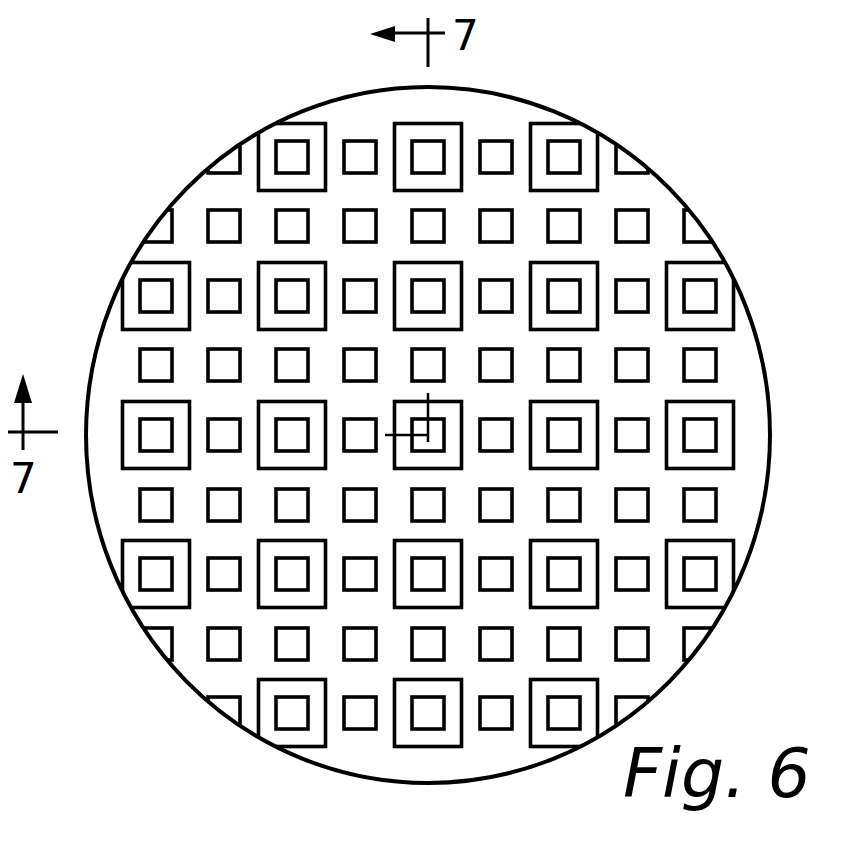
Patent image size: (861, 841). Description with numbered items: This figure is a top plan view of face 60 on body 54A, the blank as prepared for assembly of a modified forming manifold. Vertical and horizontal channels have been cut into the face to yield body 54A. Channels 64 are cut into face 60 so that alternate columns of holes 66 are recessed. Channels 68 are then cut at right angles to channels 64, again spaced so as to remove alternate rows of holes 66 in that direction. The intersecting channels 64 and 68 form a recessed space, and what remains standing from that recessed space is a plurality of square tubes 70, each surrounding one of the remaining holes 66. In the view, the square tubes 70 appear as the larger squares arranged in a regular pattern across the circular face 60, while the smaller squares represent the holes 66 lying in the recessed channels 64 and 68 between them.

The body 54A is at (677, 193).
The face 60 is at (454, 413).
The channels 64 is at (356, 124).
The holes 66 is at (497, 155).
The channels 68 is at (192, 227).
The square tubes 70 is at (428, 155).